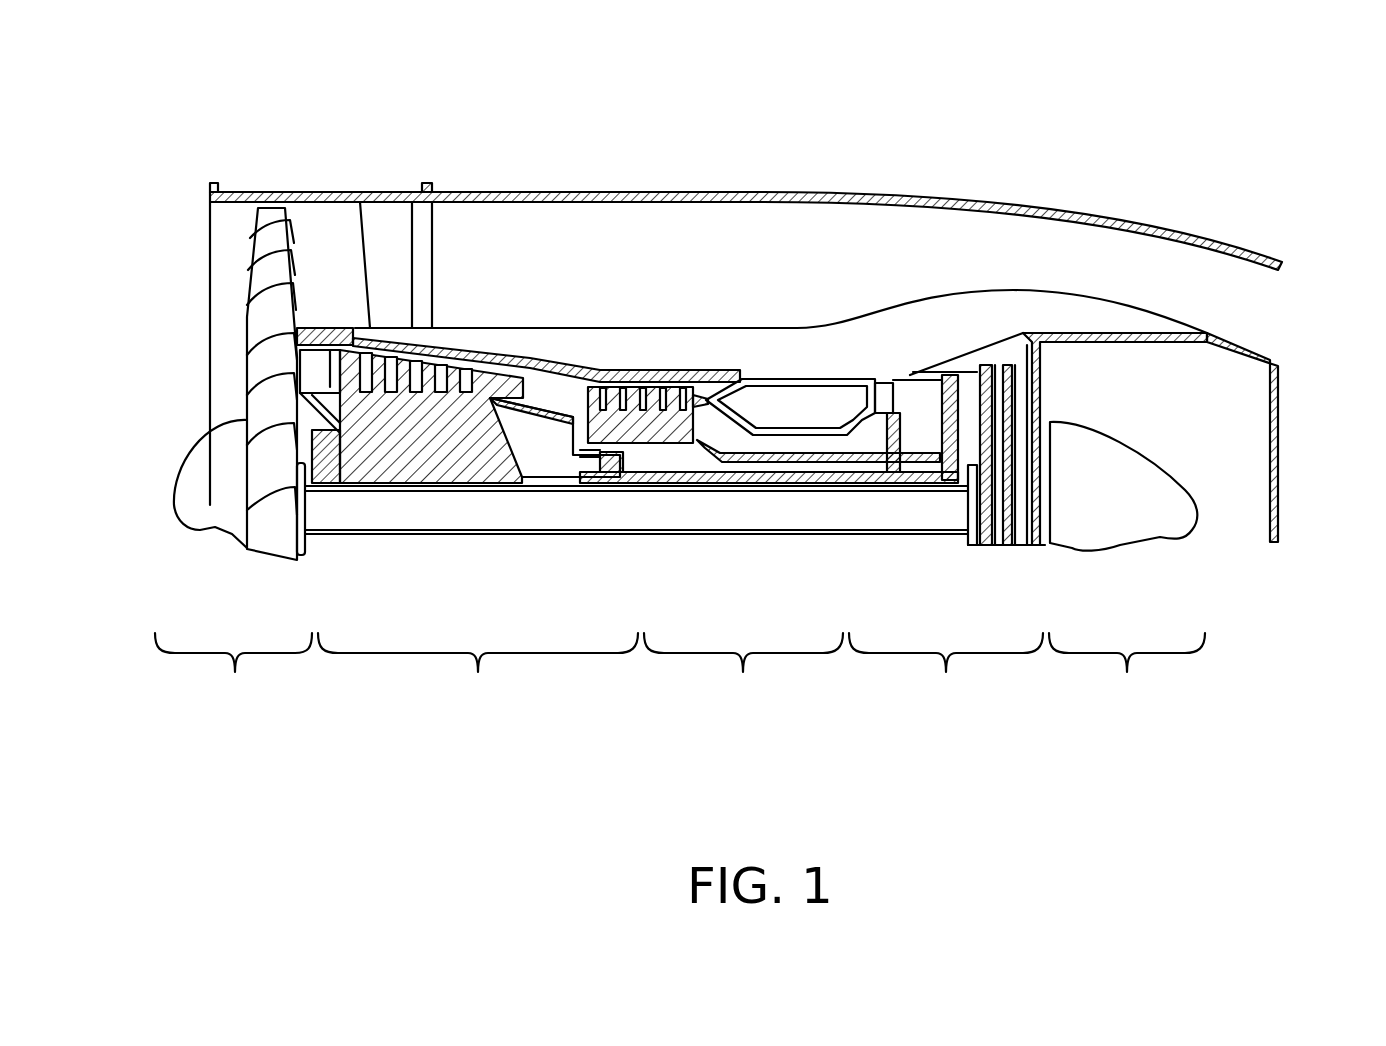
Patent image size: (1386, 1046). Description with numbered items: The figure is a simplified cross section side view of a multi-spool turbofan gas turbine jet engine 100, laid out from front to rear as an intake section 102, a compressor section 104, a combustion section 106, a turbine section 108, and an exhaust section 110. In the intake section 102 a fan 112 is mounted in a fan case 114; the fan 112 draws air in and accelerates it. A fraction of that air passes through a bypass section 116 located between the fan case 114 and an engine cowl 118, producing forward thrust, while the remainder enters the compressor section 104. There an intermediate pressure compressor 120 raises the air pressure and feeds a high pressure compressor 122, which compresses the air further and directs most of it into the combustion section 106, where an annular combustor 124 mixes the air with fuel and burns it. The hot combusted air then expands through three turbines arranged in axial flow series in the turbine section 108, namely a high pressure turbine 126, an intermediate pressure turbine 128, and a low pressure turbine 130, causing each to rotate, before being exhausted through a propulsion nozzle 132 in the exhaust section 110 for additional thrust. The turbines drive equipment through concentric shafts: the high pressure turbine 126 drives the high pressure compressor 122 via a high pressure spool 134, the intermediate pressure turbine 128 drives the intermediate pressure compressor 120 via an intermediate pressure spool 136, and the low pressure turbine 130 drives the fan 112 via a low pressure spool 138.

The multi-spool turbofan gas turbine jet engine 100 is at (447, 82).
The intake section 102 is at (233, 568).
The compressor section 104 is at (478, 675).
The combustion section 106 is at (743, 675).
The turbine section 108 is at (946, 675).
The exhaust section 110 is at (1127, 569).
The fan 112 is at (258, 325).
The fan case 114 is at (328, 192).
The bypass section 116 is at (647, 220).
The engine cowl 118 is at (737, 328).
The intermediate pressure compressor 120 is at (425, 470).
The high pressure compressor 122 is at (652, 447).
The annular combustor 124 is at (840, 388).
The high pressure turbine 126 is at (900, 387).
The intermediate pressure turbine 128 is at (968, 385).
The low pressure turbine 130 is at (1042, 368).
The propulsion nozzle 132 is at (1250, 443).
The high pressure spool 134 is at (748, 457).
The intermediate pressure spool 136 is at (845, 483).
The low pressure spool 138 is at (930, 517).